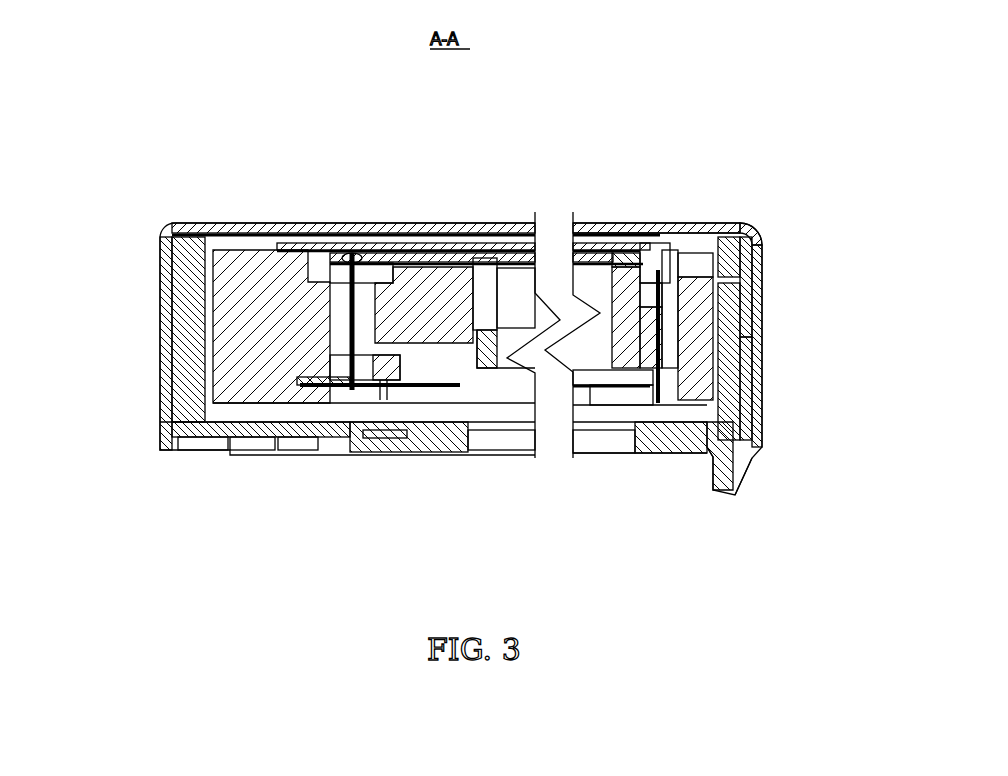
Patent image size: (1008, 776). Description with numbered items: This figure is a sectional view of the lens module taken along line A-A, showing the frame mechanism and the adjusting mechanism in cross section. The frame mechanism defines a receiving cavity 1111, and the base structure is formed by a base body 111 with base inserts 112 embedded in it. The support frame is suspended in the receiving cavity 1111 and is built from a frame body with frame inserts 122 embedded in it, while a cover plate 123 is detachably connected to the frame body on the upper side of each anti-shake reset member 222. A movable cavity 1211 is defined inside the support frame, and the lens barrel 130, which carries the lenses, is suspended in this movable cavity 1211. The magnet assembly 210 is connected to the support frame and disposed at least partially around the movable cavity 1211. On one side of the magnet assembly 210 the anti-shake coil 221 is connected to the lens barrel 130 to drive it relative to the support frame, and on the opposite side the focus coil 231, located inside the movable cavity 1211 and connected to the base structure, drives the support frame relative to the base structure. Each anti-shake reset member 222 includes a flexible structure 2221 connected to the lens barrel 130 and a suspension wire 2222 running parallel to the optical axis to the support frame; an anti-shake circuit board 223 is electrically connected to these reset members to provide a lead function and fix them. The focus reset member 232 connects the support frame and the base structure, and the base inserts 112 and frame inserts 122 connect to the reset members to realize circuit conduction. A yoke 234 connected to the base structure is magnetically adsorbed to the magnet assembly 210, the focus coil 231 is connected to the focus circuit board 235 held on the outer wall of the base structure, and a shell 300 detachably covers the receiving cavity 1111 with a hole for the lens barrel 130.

The base body 111 is at (188, 440).
The base inserts 112 is at (287, 442).
The receiving cavity 1111 is at (207, 235).
The movable cavity 1211 is at (660, 385).
The frame inserts 122 is at (320, 440).
The cover plate 123 is at (300, 240).
The lens barrel 130 is at (633, 262).
The magnet assembly 210 is at (762, 385).
The anti-shake coil 221 is at (660, 245).
The anti-shake reset member 222 is at (377, 179).
The flexible structure 2221 is at (395, 258).
The suspension wire 2222 is at (360, 250).
The anti-shake circuit board 223 is at (625, 255).
The focus coil 231 is at (762, 280).
The focus reset member 232 is at (447, 440).
The yoke 234 is at (762, 335).
The focus circuit board 235 is at (755, 237).
The shell 300 is at (165, 335).